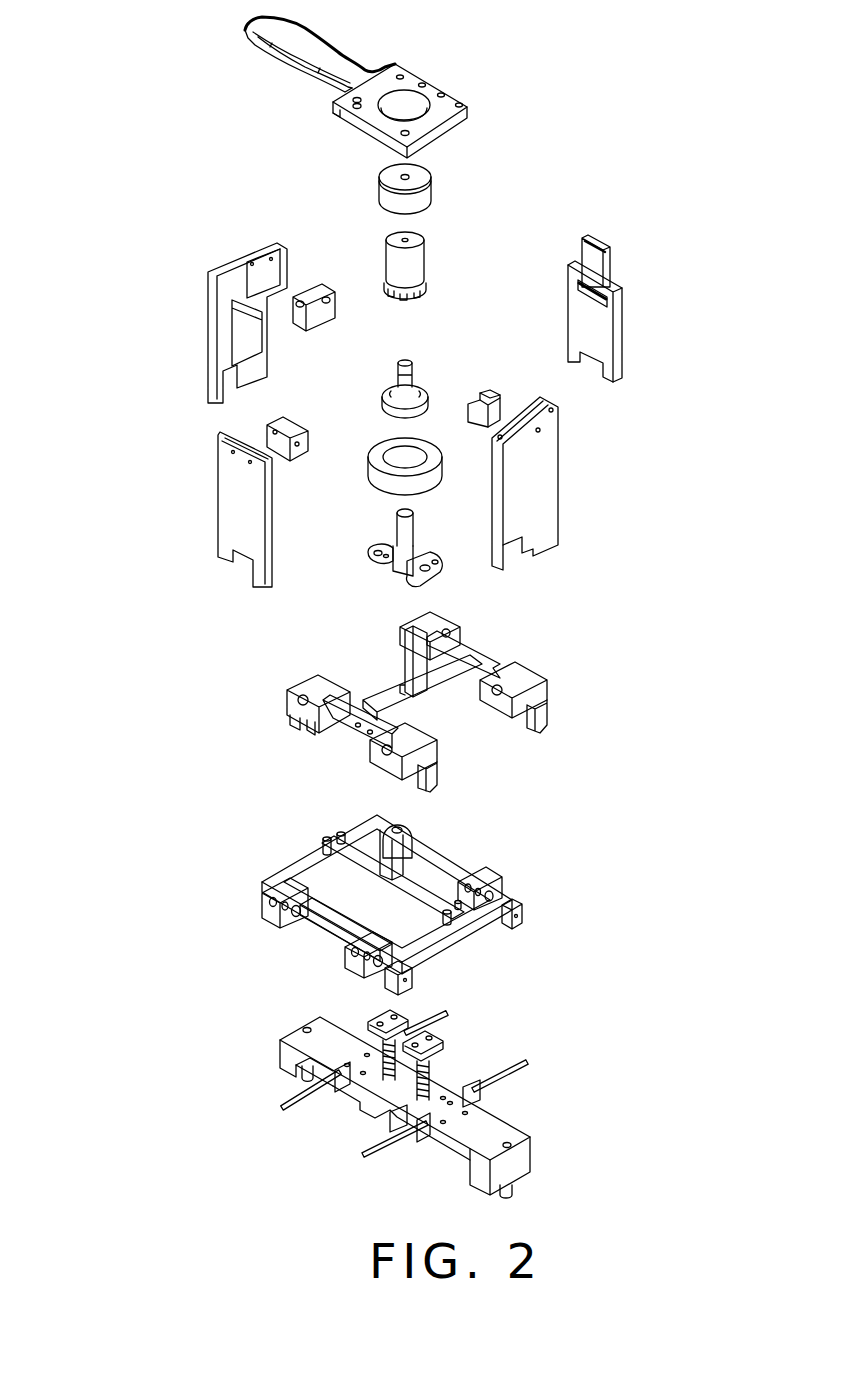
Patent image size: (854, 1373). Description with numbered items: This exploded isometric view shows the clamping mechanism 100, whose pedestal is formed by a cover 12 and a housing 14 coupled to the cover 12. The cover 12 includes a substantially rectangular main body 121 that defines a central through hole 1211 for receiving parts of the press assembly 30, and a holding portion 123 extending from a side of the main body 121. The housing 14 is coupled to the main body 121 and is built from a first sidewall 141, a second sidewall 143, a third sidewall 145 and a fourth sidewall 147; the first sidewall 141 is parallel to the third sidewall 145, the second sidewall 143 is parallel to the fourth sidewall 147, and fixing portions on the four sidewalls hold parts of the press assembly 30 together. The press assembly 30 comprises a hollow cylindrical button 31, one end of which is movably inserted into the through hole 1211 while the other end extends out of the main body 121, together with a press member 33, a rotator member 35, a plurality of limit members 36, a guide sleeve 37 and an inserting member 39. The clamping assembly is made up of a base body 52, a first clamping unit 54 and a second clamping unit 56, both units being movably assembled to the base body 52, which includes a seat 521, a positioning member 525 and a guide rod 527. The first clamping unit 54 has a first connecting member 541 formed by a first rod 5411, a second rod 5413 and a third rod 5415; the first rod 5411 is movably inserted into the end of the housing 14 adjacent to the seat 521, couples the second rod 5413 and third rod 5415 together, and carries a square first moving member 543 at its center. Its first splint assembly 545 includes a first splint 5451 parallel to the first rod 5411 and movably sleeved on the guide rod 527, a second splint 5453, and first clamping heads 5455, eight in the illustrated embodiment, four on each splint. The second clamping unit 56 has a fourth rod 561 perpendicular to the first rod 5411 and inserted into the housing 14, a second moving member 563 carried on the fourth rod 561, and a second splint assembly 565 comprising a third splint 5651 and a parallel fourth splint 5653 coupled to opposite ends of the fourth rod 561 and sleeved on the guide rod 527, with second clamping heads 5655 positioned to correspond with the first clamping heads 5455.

The clamping mechanism 100 is at (150, 20).
The cover 12 is at (418, 58).
The main body 121 is at (440, 113).
The through hole 1211 is at (417, 110).
The holding portion 123 is at (338, 67).
The press assembly 30 is at (382, 248).
The button 31 is at (427, 192).
The press member 33 is at (417, 257).
The rotator member 35 is at (408, 373).
The limit member 36 is at (487, 390).
The guide sleeve 37 is at (382, 478).
The inserting member 39 is at (390, 530).
The housing 14 is at (625, 272).
The first sidewall 141 is at (223, 302).
The second sidewall 143 is at (240, 485).
The third sidewall 145 is at (540, 473).
The fourth sidewall 147 is at (590, 317).
The second clamping unit 56 is at (497, 635).
The fourth rod 561 is at (383, 702).
The second moving member 563 is at (410, 662).
The second splint assembly 565 is at (673, 643).
The third splint 5651 is at (493, 658).
The fourth splint 5653 is at (412, 712).
The second clamping head 5655 is at (550, 720).
The first clamping unit 54 is at (552, 870).
The first connecting member 541 is at (142, 825).
The first rod 5411 is at (365, 858).
The second rod 5413 is at (350, 871).
The third rod 5415 is at (420, 938).
The first moving member 543 is at (390, 858).
The first splint assembly 545 is at (673, 900).
The first splint 5451 is at (505, 920).
The second splint 5453 is at (395, 992).
The first clamping head 5455 is at (523, 908).
The base body 52 is at (535, 1098).
The seat 521 is at (295, 1038).
The positioning member 525 is at (303, 1073).
The guide rod 527 is at (295, 1107).